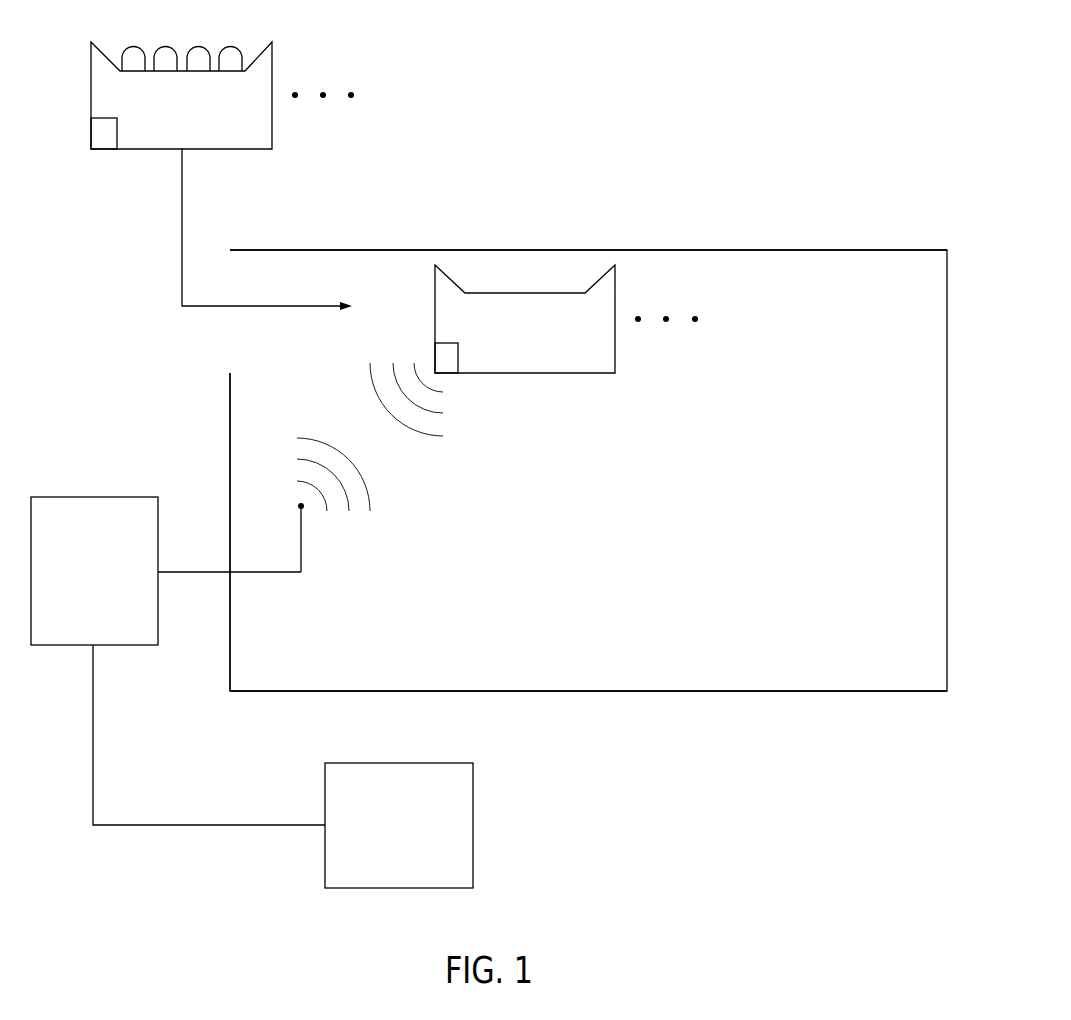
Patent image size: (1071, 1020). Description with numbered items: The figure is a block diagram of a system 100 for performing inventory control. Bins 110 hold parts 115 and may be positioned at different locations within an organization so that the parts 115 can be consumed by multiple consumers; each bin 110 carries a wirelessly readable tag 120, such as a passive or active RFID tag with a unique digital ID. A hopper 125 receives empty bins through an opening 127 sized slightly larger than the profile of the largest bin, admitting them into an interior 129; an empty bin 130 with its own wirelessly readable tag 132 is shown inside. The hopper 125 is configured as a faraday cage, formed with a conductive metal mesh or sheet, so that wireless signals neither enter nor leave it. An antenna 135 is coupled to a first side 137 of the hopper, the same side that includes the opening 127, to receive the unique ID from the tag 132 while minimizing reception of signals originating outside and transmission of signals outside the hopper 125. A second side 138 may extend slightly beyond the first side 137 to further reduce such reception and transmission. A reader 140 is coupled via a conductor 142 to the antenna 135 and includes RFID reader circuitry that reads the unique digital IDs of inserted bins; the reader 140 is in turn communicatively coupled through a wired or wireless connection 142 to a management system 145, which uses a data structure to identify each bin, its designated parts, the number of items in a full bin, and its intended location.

The system 100 is at (843, 52).
The bin 110 is at (211, 150).
The parts 115 is at (197, 45).
The wirelessly readable tag 120 is at (90, 138).
The hopper 125 is at (589, 250).
The opening 127 is at (241, 350).
The interior 129 is at (657, 647).
The empty bin 130 is at (527, 374).
The wirelessly readable tag 132 is at (447, 342).
The antenna 135 is at (301, 538).
The first side 137 is at (231, 418).
The second side 138 is at (230, 250).
The reader 140 is at (94, 495).
The conductor 142 is at (192, 570).
The management system 145 is at (400, 763).